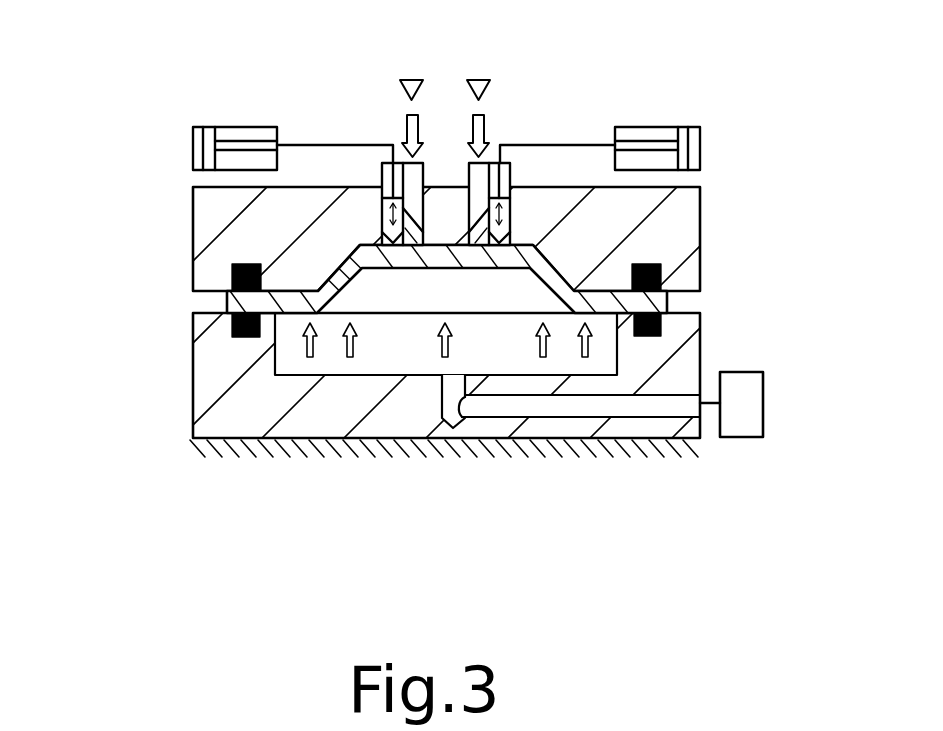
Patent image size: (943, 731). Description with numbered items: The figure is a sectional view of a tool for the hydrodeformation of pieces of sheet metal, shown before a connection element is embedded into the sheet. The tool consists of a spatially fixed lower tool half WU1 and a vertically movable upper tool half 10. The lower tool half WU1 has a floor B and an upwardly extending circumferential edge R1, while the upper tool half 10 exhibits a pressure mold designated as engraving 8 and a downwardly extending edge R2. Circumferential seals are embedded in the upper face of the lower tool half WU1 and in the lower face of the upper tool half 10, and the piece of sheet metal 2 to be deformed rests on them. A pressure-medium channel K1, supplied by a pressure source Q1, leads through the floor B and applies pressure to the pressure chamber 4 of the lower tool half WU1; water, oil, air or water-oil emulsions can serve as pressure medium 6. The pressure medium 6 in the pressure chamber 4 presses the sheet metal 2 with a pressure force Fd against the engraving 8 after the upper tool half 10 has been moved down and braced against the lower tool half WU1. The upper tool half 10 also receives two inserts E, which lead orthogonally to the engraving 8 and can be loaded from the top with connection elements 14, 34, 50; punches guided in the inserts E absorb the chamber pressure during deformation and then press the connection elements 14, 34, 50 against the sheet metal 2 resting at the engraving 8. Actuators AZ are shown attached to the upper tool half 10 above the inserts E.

The actuator AZ is at (252, 127).
The insert E is at (380, 172).
The connection element 14 is at (443, 93).
The connection element 34 is at (445, 90).
The connection element 50 is at (478, 136).
The downwardly extending edge R2 is at (213, 268).
The upwardly extending circumferential edge R1 is at (213, 348).
The upper tool half 10 is at (673, 215).
The engraving 8 is at (557, 265).
The piece of sheet metal 2 is at (647, 304).
The pressure chamber 4 is at (595, 358).
The pressure medium 6 is at (507, 357).
The lower tool half WU1 is at (225, 392).
The floor B is at (282, 425).
The pressure-medium channel K1 is at (676, 400).
The pressure source Q1 is at (743, 415).
The pressure force Fd is at (447, 342).